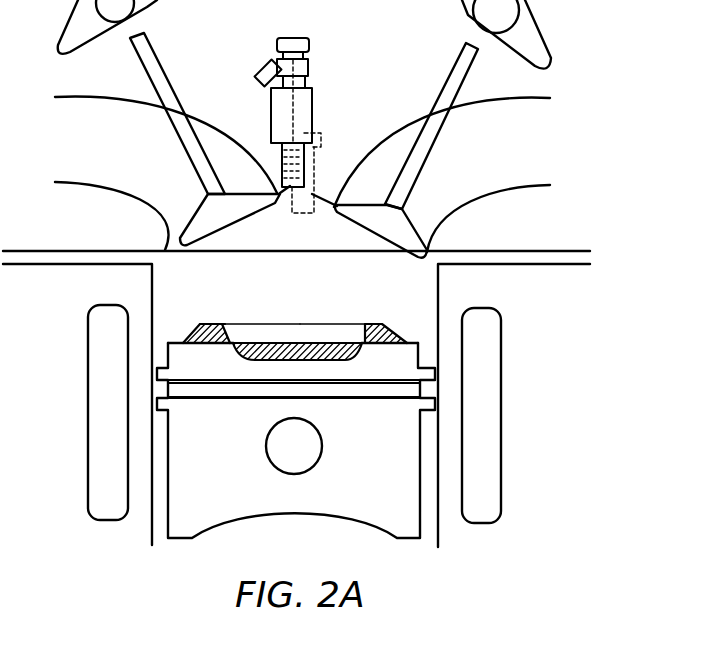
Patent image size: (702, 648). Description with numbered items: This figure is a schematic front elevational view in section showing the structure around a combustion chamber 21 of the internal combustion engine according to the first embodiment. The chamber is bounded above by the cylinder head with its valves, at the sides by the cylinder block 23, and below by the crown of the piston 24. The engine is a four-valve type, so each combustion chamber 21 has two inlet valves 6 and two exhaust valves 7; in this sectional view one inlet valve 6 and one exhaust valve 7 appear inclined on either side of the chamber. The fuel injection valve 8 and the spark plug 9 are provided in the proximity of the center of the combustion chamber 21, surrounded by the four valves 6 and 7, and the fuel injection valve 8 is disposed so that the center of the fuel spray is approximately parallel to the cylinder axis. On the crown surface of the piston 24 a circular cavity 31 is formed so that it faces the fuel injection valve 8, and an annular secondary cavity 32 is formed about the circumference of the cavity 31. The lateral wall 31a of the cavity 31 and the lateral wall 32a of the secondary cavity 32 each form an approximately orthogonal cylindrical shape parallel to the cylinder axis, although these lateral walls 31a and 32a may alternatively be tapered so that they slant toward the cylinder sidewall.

The inlet valve 6 is at (207, 178).
The exhaust valve 7 is at (410, 188).
The fuel injection valve 8 is at (268, 98).
The spark plug 9 is at (306, 165).
The combustion chamber 21 is at (531, 208).
The cylinder block 23 is at (516, 288).
The piston 24 is at (404, 447).
The cavity 31 is at (302, 332).
The lateral wall 31a is at (320, 322).
The secondary cavity 32 is at (245, 332).
The lateral wall 32a is at (233, 322).